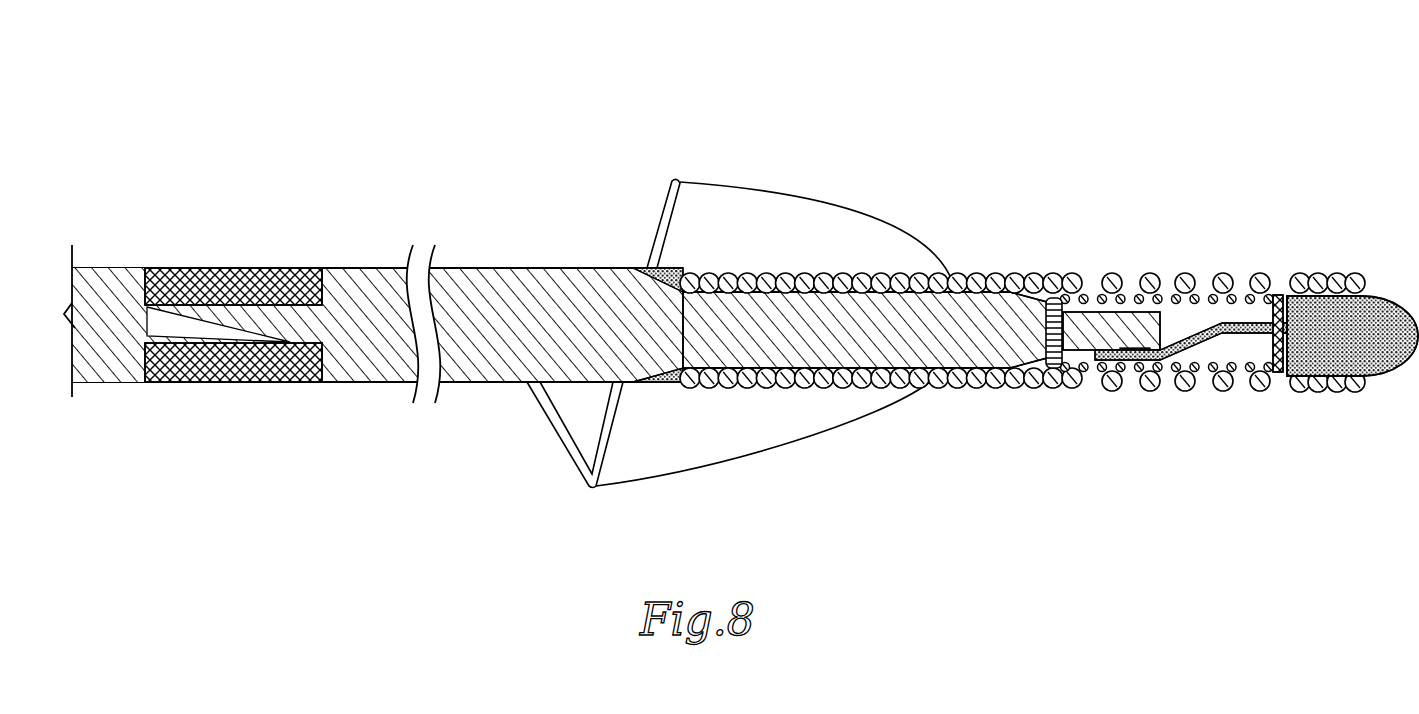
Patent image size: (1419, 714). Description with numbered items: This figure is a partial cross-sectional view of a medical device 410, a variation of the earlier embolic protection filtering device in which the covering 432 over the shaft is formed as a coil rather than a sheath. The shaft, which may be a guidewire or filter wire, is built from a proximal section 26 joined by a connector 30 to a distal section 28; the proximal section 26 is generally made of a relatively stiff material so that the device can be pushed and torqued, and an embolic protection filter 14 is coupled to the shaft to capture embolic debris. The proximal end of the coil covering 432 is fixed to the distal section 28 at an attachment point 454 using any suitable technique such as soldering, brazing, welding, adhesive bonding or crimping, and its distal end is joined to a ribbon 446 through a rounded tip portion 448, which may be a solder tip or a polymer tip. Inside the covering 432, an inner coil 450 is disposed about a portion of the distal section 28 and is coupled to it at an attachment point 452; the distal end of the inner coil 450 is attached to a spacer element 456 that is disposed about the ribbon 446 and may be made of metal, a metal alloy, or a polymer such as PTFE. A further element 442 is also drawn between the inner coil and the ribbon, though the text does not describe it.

The device 410 is at (215, 137).
The embolic protection filter 14 is at (702, 172).
The proximal section 26 is at (126, 290).
The connector 30 is at (270, 274).
The attachment point 454 is at (650, 267).
The distal section 28 is at (950, 322).
The covering 432 is at (1073, 278).
The inner coil 450 is at (1172, 293).
The attachment point 452 is at (1043, 363).
The connector bar 442 is at (1133, 353).
The ribbon 446 is at (1202, 323).
The spacer element 456 is at (1280, 372).
The rounded tip portion 448 is at (1385, 300).